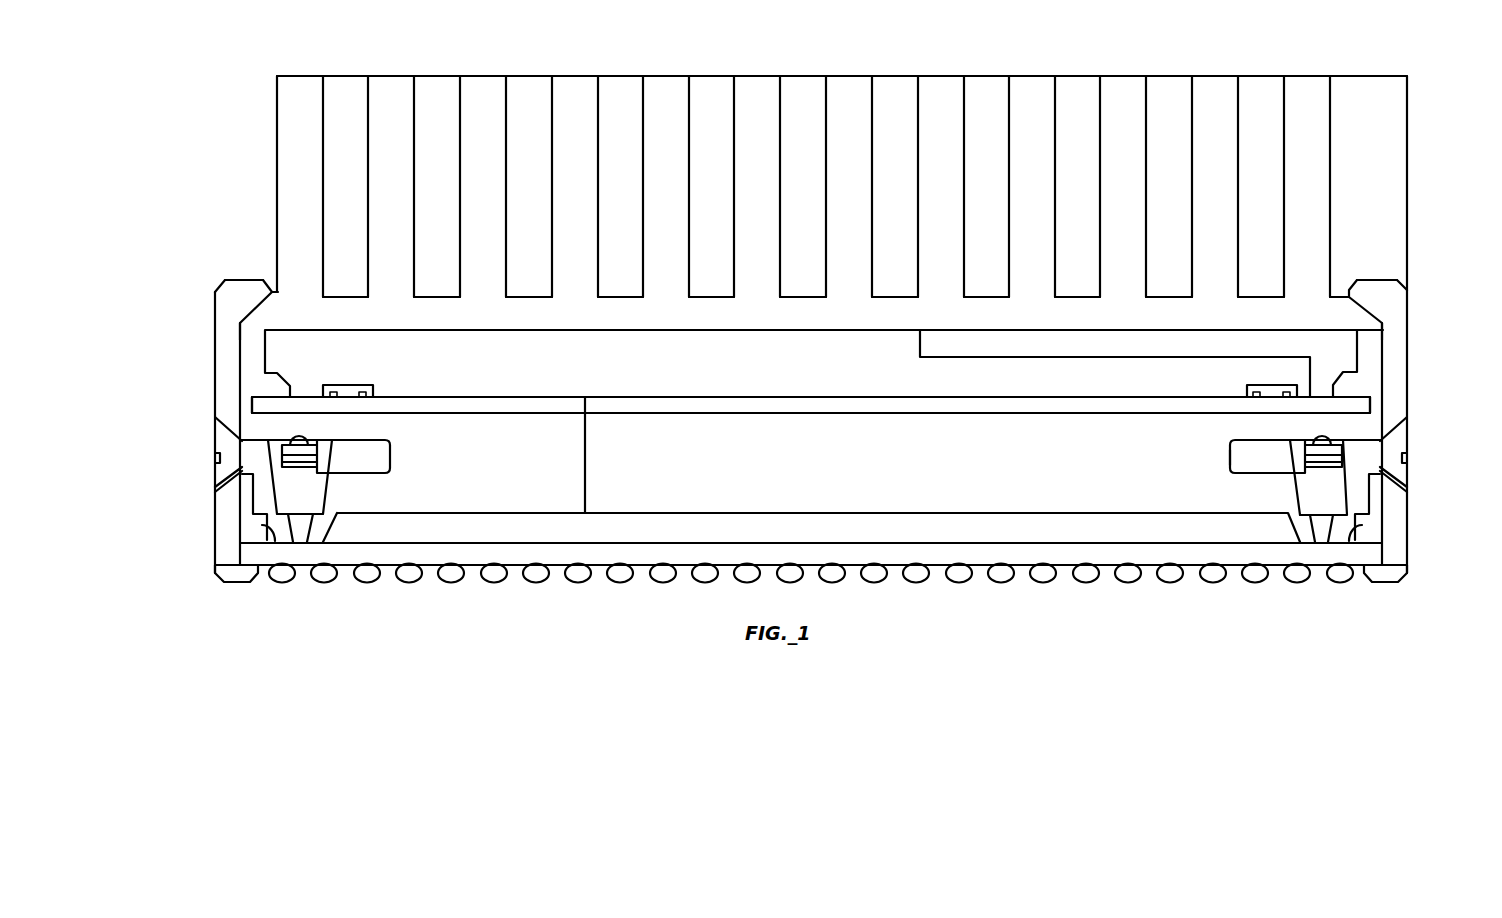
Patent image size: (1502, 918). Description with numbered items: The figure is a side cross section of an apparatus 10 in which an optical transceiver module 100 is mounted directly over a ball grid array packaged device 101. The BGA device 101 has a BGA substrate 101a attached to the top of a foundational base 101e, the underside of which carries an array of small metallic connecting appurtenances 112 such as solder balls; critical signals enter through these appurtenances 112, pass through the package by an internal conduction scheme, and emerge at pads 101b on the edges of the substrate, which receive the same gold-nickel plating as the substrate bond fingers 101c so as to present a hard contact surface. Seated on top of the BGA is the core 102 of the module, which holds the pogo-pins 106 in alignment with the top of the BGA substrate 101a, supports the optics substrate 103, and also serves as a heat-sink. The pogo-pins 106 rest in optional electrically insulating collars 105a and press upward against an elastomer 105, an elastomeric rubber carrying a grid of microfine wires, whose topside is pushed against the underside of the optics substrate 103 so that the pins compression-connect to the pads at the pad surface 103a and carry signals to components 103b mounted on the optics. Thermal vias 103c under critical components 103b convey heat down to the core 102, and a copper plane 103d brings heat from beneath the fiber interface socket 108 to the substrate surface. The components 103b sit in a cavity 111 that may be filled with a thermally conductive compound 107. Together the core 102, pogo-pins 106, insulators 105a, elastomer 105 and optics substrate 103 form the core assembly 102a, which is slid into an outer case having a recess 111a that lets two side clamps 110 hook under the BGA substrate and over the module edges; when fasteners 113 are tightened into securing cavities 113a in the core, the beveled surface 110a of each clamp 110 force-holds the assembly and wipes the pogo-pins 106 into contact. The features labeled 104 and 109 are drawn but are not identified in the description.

The apparatus 10 is at (258, 27).
The optical transceiver module 100 is at (893, 335).
The ball grid array packaged device 101 is at (690, 537).
The BGA substrate 101a is at (1014, 536).
The pads 101b is at (262, 525).
The substrate bond fingers 101c is at (224, 560).
The foundational base 101e is at (553, 597).
The core 102 is at (744, 469).
The core assembly 102a is at (571, 466).
The optics substrate 103 is at (655, 398).
The pad surface 103a is at (250, 422).
The components 103b is at (335, 385).
The thermal vias 103c is at (365, 385).
The copper plane 103d is at (1048, 358).
The pin 104 is at (300, 514).
The elastomer 105 is at (337, 443).
The electrically insulating collar 105a is at (240, 472).
The pogo-pins 106 is at (318, 500).
The thermally conductive compound 107 is at (523, 386).
The interface socket 108 is at (1380, 95).
The heat sink fin 109 is at (760, 76).
The clamp 110 is at (223, 312).
The beveled surface 110a is at (237, 298).
The cavity 111 is at (253, 357).
The recess 111a is at (252, 304).
The metallic connecting appurtenances 112 is at (1170, 578).
The fasteners 113 is at (222, 438).
The securing cavity 113a is at (1236, 470).